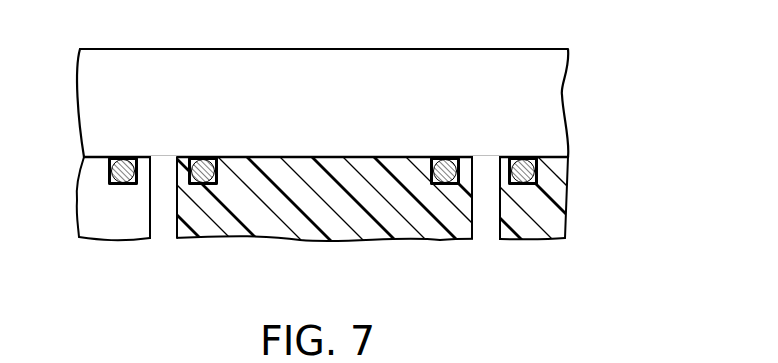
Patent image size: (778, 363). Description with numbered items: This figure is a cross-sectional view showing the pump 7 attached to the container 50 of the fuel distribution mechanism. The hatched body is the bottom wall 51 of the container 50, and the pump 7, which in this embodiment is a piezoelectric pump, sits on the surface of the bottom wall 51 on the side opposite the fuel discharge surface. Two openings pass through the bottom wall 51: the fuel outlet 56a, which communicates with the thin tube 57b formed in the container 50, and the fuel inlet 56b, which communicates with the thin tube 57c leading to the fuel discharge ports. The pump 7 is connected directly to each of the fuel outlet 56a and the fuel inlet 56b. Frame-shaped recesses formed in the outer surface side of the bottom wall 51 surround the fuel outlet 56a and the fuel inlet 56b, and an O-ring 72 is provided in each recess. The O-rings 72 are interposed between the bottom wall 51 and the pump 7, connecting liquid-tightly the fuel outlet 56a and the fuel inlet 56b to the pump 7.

The pump 7 is at (318, 72).
The container 50 is at (318, 197).
The bottom wall 51 is at (557, 199).
The fuel outlet 56a is at (152, 160).
The fuel inlet 56b is at (478, 160).
The thin tube 57b is at (178, 201).
The thin tube 57c is at (500, 212).
The O-ring 72 is at (122, 185).